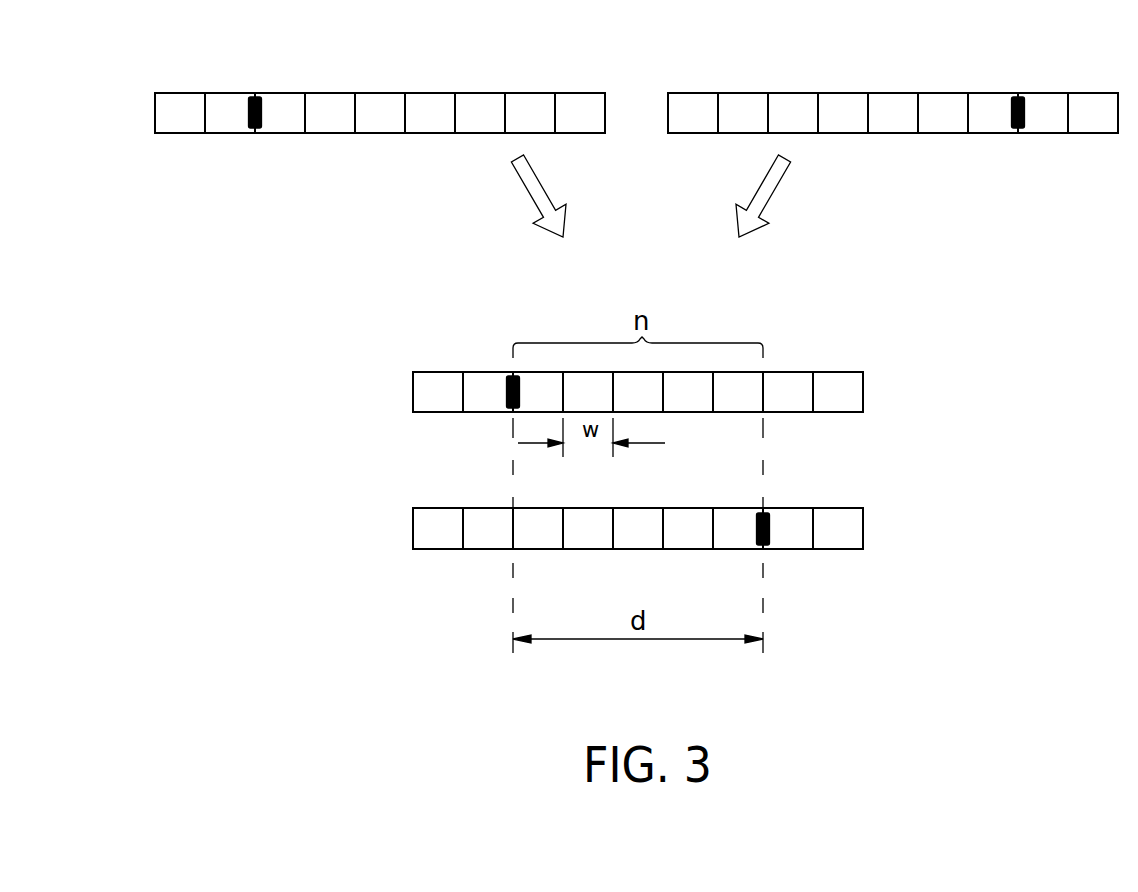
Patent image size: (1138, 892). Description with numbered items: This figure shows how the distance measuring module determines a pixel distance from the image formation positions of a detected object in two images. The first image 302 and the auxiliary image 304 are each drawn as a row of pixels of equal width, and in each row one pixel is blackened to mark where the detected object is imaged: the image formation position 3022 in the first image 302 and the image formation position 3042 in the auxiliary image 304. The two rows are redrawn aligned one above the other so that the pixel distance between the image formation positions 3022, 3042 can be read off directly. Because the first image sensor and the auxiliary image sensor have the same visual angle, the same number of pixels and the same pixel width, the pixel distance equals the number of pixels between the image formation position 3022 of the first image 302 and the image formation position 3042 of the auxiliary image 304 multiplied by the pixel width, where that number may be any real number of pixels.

The first image 302 is at (468, 58).
The auxiliary image 304 is at (982, 58).
The image formation position 3022 is at (248, 112).
The image formation position 3042 is at (1025, 115).